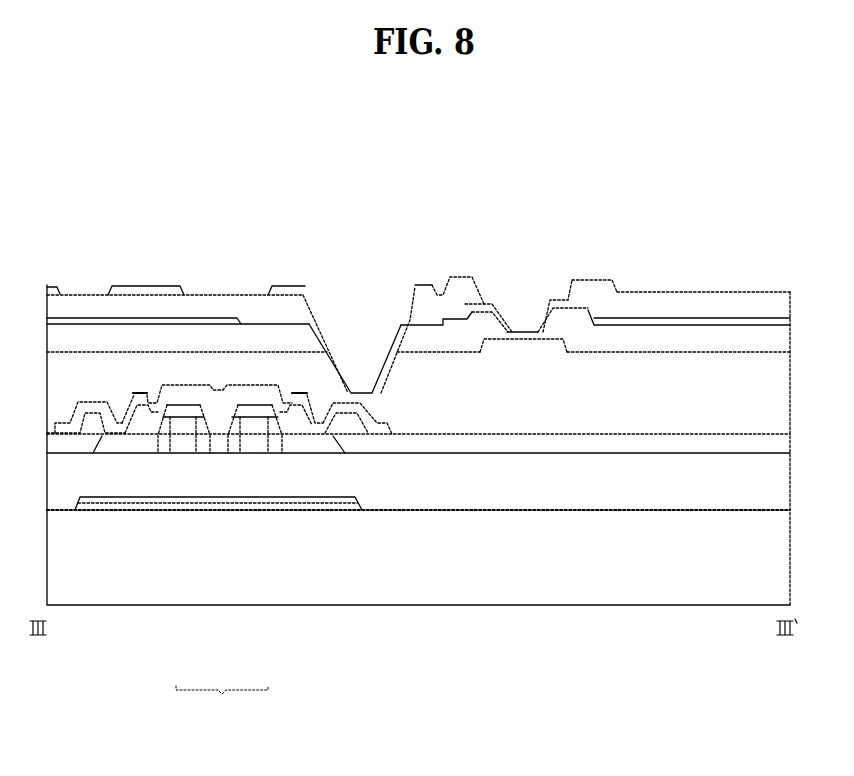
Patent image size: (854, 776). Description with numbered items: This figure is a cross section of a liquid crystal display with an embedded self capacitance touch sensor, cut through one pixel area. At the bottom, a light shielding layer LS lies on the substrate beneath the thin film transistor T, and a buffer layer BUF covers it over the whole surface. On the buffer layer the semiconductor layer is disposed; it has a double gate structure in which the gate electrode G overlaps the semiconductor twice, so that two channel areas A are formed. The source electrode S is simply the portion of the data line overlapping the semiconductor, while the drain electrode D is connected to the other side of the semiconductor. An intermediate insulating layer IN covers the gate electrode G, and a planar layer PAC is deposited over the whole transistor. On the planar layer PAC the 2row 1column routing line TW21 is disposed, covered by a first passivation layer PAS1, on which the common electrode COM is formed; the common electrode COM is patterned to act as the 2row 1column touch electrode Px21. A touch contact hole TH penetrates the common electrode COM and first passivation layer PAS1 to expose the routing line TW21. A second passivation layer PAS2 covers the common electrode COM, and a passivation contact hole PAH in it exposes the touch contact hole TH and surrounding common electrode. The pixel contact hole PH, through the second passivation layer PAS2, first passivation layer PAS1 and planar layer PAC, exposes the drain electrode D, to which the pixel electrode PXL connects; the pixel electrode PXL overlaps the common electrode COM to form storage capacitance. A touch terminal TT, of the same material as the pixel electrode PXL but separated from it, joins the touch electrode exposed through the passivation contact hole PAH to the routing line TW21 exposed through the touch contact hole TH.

The pixel electrode PXL is at (305, 286).
The common electrode COM is at (220, 316).
The pixel contact hole PH is at (368, 296).
The passivation contact hole PAH is at (492, 290).
The touch terminal TT is at (472, 270).
The touch contact hole TH is at (527, 312).
The 2row 1column touch electrode Px21 is at (585, 279).
The second passivation layer PAS2 is at (680, 291).
The first passivation layer PAS1 is at (748, 326).
The source electrode S is at (112, 425).
The gate electrode G is at (241, 425).
The drain electrode D is at (342, 420).
The channel area A is at (222, 455).
The light shielding layer LS is at (318, 514).
The thin film transistor T is at (222, 704).
The 2row 1column routing line TW21 is at (517, 352).
The buffer layer BUF is at (594, 498).
The intermediate insulating layer IN is at (660, 448).
The planar layer PAC is at (720, 415).